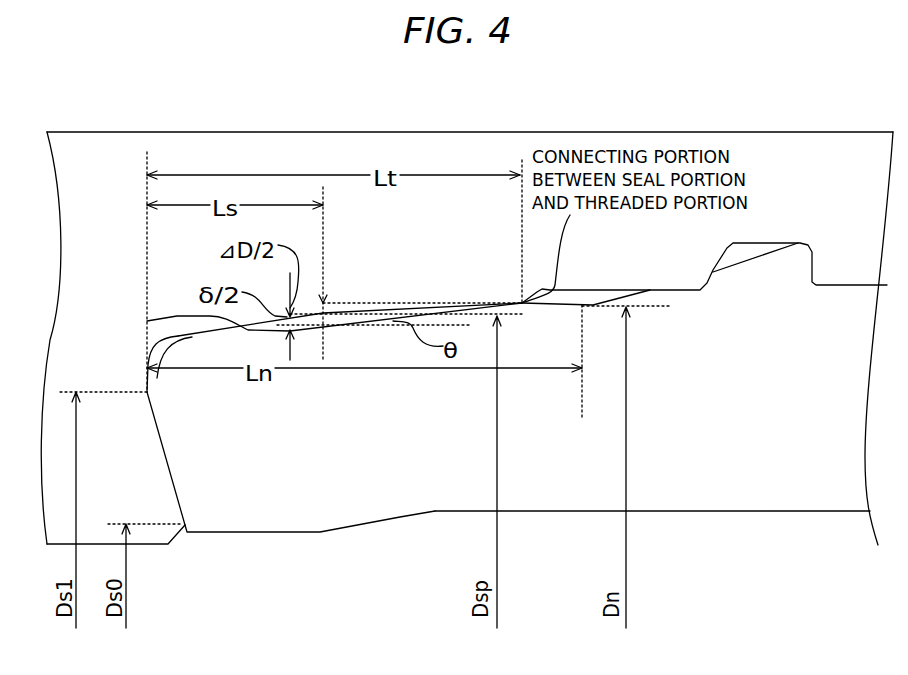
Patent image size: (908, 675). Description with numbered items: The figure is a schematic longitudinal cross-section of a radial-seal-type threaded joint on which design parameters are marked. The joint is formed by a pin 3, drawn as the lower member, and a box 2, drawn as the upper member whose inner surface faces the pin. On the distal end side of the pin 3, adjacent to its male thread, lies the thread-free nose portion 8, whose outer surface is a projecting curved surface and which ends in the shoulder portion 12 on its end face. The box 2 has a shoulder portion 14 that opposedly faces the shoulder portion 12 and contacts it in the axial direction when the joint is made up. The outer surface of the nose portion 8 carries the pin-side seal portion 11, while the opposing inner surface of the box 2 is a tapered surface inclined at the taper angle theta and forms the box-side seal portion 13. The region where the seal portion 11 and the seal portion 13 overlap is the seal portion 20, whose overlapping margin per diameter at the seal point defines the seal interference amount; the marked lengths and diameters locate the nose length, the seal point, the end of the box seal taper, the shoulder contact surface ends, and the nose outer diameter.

The box 2 is at (512, 143).
The pin 3 is at (742, 503).
The nose portion 8 is at (412, 388).
The seal portion 11 is at (340, 323).
The shoulder portion 12 is at (170, 468).
The shoulder portion 14 is at (166, 458).
The seal portion 13 is at (378, 310).
The seal portion 20 is at (147, 321).